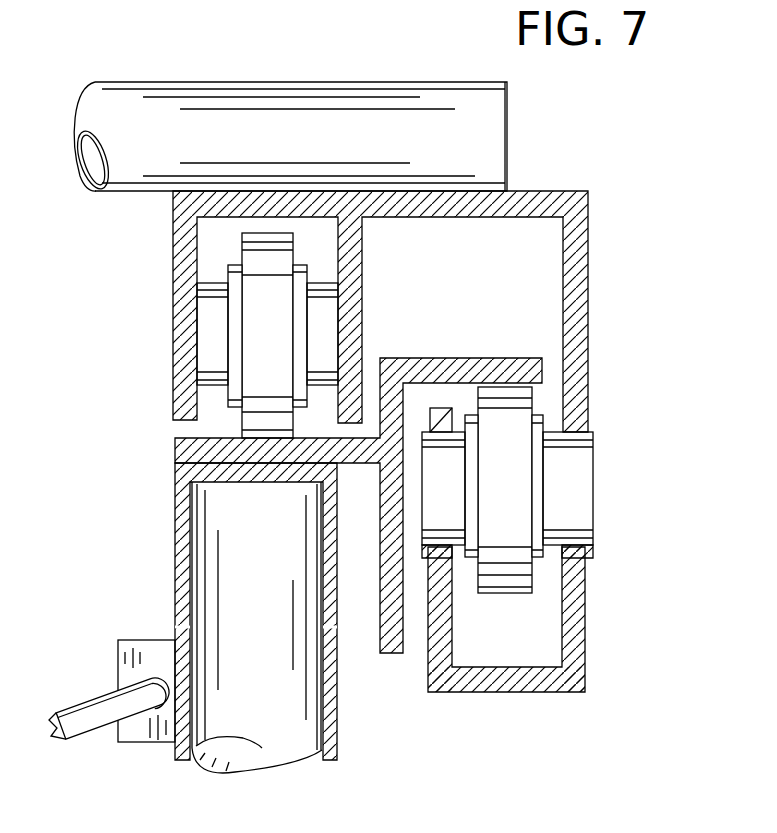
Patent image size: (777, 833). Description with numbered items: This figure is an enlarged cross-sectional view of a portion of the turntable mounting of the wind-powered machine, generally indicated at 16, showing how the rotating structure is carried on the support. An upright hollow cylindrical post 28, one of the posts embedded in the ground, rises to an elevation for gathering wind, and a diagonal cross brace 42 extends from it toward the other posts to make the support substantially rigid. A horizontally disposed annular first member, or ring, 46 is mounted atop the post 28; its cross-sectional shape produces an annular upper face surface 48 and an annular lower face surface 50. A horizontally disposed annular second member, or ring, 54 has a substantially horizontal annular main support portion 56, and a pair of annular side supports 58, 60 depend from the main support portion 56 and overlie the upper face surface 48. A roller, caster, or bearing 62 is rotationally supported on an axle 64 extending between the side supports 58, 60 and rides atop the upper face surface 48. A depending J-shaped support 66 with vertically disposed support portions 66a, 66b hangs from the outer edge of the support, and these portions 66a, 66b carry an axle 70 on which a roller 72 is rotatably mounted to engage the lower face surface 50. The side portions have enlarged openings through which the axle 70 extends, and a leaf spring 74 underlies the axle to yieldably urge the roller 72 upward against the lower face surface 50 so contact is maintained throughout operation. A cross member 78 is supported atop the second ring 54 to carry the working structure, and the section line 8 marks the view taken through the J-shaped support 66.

The section line 8- 8 is at (635, 348).
The carriage assembly 16 is at (604, 105).
The upright hollow cylindrical post 28 is at (175, 535).
The diagonal cross brace 42 is at (79, 706).
The first member, or ring 46 is at (175, 457).
The annular upper face surface 48 is at (182, 437).
The annular lower face surface 50 is at (448, 389).
The second member, or ring 54 is at (590, 215).
The annular main support portion 56 is at (533, 192).
The annular side support 58 is at (172, 290).
The annular side support 60 is at (352, 278).
The roller, caster, or bearing 62 is at (288, 252).
The axle 64 is at (215, 345).
The depending J-shaped support 66 is at (590, 257).
The vertically disposed support portion 66a is at (577, 640).
The vertically disposed support portion 66b is at (428, 652).
The axle 70 is at (580, 492).
The roller, caster, or bearing 72 is at (512, 405).
The leaf spring 74 is at (590, 548).
The cross member 78 is at (265, 102).